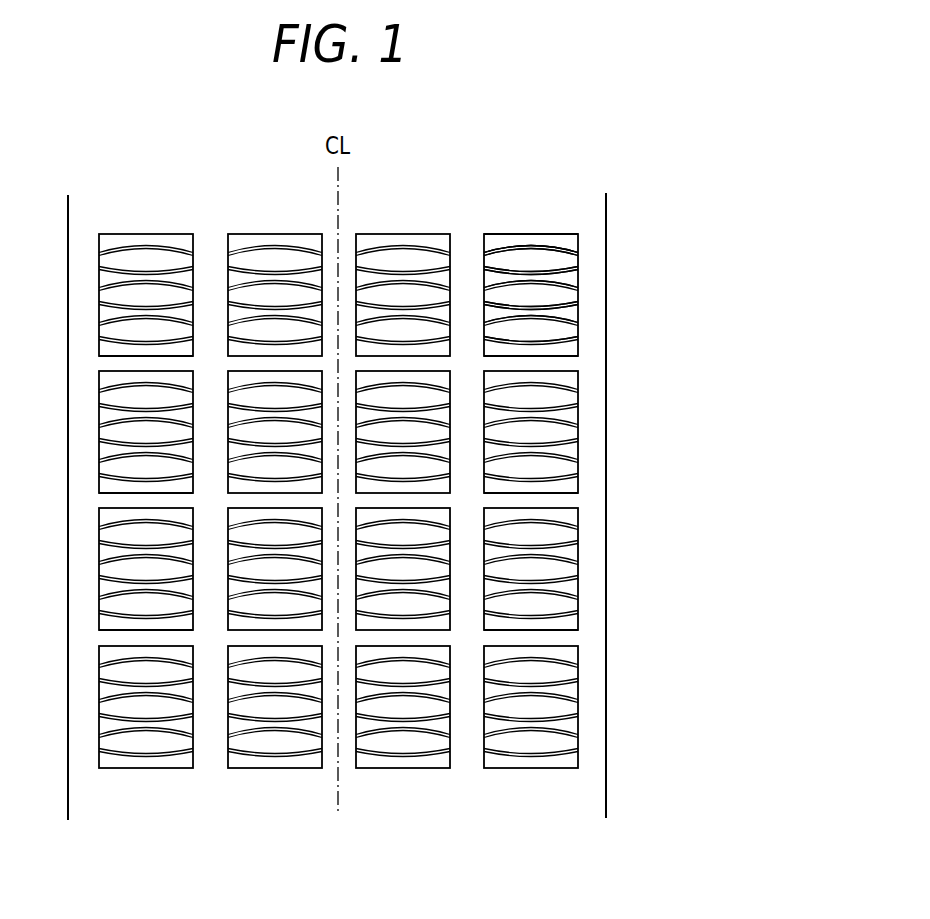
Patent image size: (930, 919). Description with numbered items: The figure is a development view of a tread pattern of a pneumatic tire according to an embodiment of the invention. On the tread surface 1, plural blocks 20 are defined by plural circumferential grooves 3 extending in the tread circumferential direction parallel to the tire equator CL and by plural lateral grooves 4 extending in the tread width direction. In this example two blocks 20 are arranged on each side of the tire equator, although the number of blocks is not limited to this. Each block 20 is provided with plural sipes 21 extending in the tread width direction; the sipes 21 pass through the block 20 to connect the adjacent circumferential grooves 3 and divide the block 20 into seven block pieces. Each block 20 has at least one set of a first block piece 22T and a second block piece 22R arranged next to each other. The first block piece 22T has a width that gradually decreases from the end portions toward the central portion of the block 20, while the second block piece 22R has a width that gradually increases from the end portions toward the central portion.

The tread surface 1 is at (337, 490).
The block 20 is at (512, 226).
The sipe 21 is at (528, 248).
The first block piece 22T is at (563, 239).
The second block piece 22R is at (563, 260).
The lateral groove 4 is at (553, 363).
The circumferential groove 3 is at (88, 750).